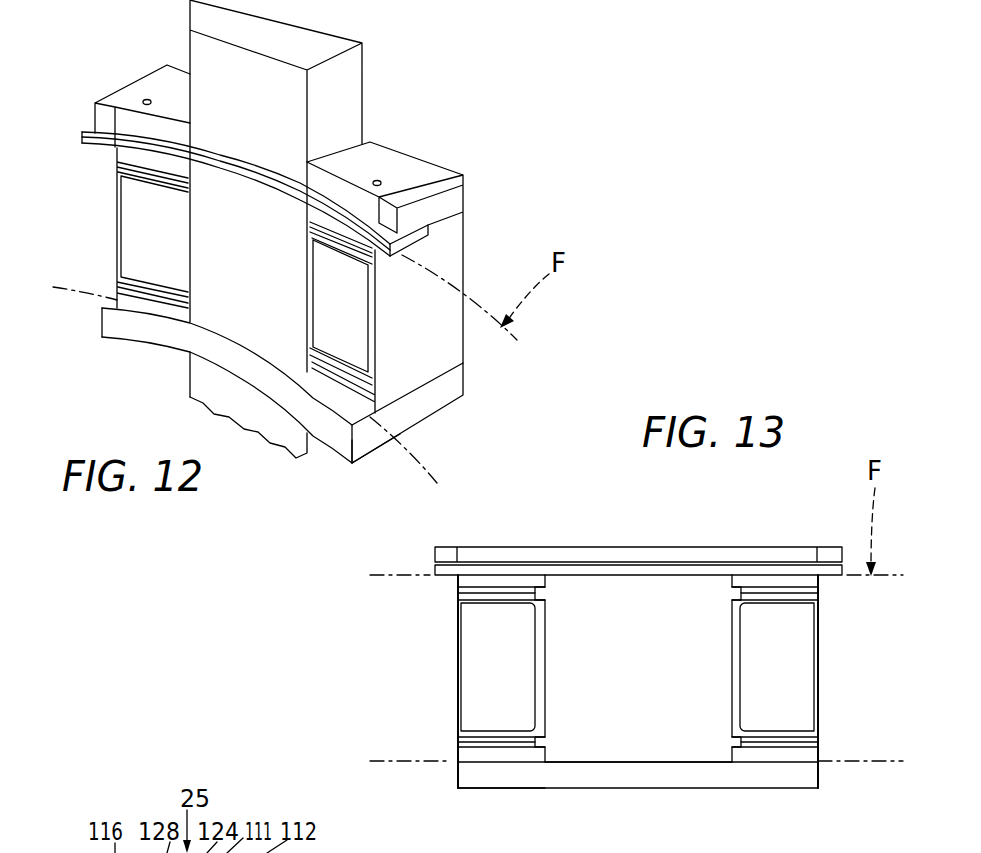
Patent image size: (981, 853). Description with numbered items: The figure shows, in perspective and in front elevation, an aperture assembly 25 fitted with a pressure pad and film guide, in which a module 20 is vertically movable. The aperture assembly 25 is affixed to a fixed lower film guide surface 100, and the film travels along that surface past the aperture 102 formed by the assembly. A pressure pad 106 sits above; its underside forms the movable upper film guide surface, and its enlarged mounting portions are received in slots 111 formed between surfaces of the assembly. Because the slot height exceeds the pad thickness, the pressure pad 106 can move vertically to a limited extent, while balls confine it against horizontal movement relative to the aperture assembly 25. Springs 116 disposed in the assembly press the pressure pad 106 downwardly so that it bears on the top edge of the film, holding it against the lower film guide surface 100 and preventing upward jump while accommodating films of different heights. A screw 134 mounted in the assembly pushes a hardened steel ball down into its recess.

In FIG. 12, the module 20 is at (374, 66).
In FIG. 12, the aperture assembly 25 is at (338, 470).
In FIG. 13, the aperture assembly 25 is at (792, 540).
In FIG. 12, the lower film guide surface 100 is at (220, 338).
In FIG. 13, the lower film guide surface 100 is at (687, 757).
In FIG. 13, the aperture 102 is at (630, 750).
In FIG. 12, the pressure pad 106 is at (415, 242).
In FIG. 13, the pressure pad 106 is at (678, 576).
In FIG. 12, the slots 111 is at (415, 236).
In FIG. 13, the springs 116 is at (583, 852).
In FIG. 13, the screw 134 is at (541, 852).